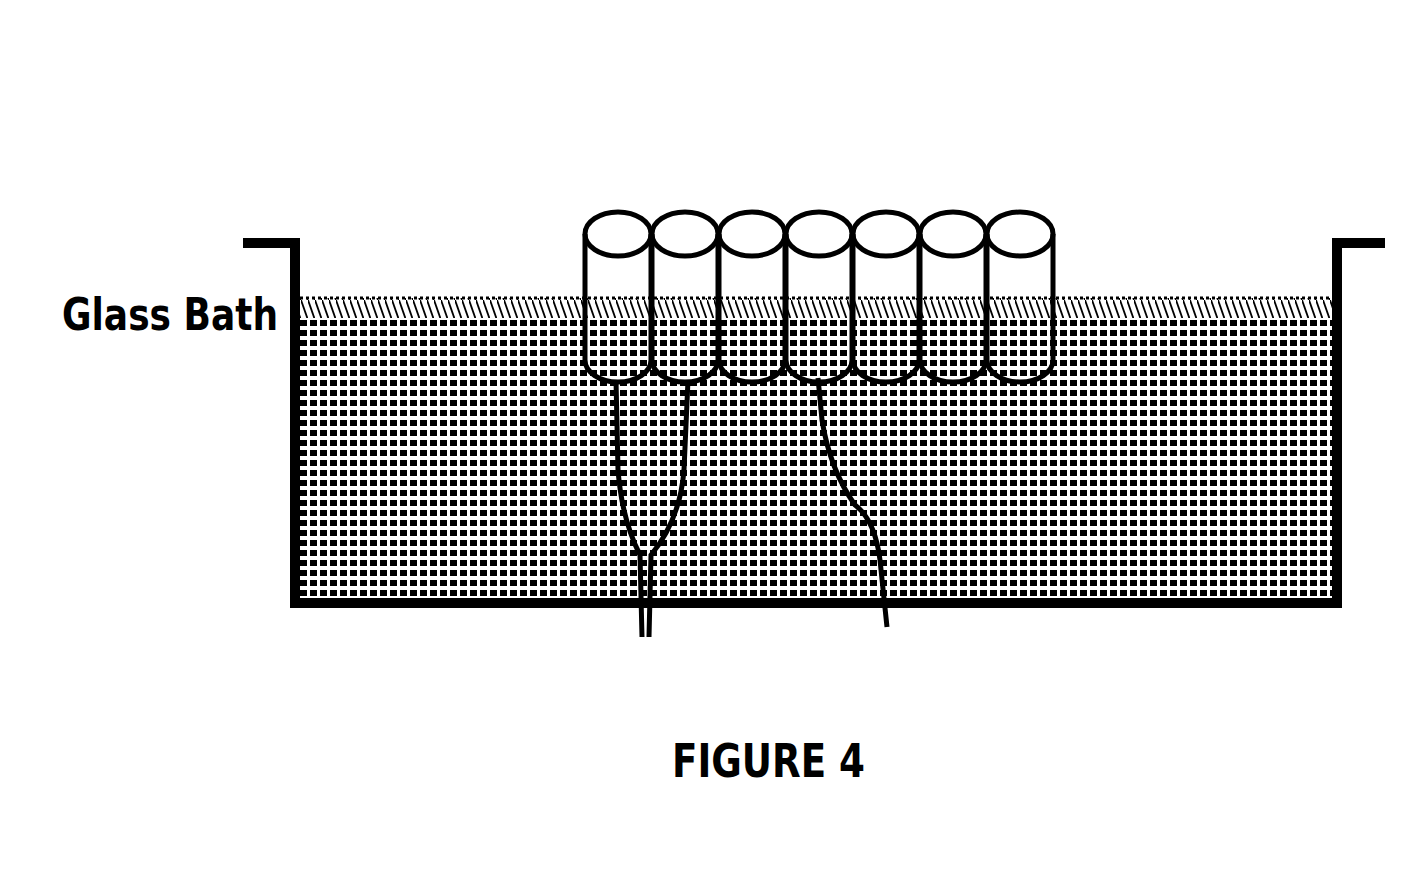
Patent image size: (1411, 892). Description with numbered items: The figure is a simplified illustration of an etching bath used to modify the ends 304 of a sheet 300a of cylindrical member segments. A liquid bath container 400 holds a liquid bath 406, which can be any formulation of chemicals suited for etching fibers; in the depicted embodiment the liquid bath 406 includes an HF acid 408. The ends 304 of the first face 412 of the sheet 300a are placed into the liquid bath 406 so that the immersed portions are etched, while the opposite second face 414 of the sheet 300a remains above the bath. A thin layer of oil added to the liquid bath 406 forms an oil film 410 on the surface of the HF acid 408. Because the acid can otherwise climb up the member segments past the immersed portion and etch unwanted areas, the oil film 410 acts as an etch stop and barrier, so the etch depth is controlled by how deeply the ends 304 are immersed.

The liquid bath container 400 is at (292, 446).
The HF acid 408 is at (397, 377).
The oil film 410 is at (1190, 303).
The liquid bath 406 is at (1127, 266).
The sheet 300a is at (727, 233).
The second face 414 is at (817, 233).
The ends 304 is at (649, 535).
The first face 412 is at (871, 531).